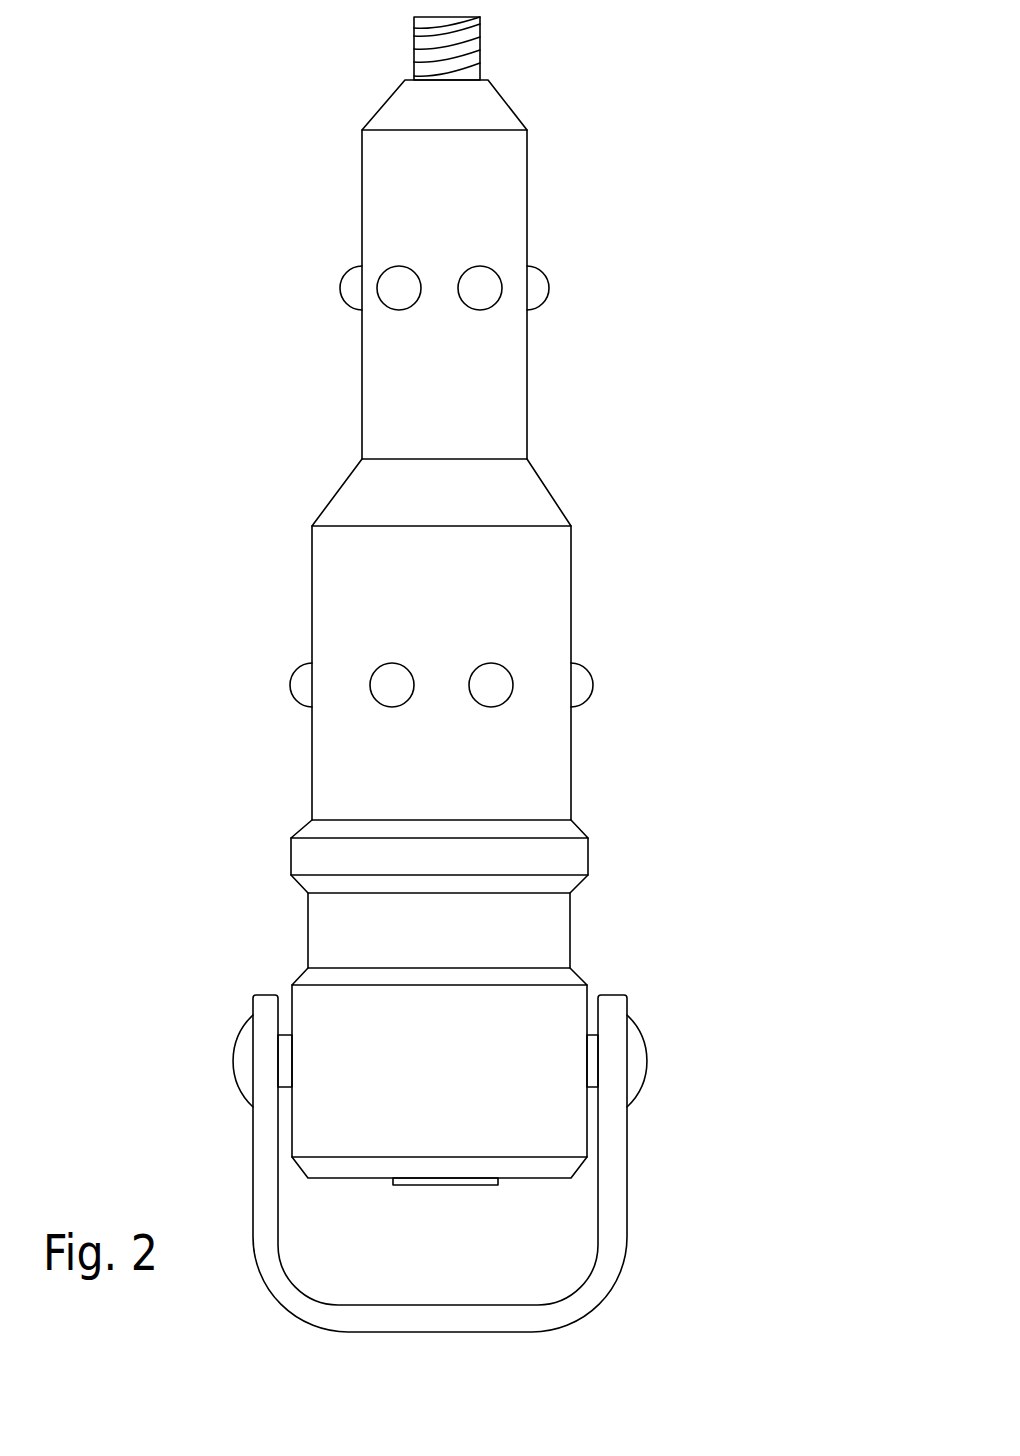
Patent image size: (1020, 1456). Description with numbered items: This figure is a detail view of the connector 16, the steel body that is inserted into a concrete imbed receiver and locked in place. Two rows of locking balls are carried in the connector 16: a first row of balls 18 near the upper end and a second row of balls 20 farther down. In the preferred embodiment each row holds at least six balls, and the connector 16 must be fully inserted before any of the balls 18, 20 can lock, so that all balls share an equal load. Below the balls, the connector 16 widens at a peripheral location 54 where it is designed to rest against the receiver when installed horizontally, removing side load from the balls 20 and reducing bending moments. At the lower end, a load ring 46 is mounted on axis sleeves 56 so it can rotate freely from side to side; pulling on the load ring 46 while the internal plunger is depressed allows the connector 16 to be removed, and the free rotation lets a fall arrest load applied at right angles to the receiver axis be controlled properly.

The connector 16 is at (527, 201).
The first row of balls 18 is at (543, 302).
The second row of balls 20 is at (593, 682).
The peripheral location 54 is at (592, 833).
The axis sleeves 56 is at (235, 1037).
The load ring 46 is at (627, 1245).